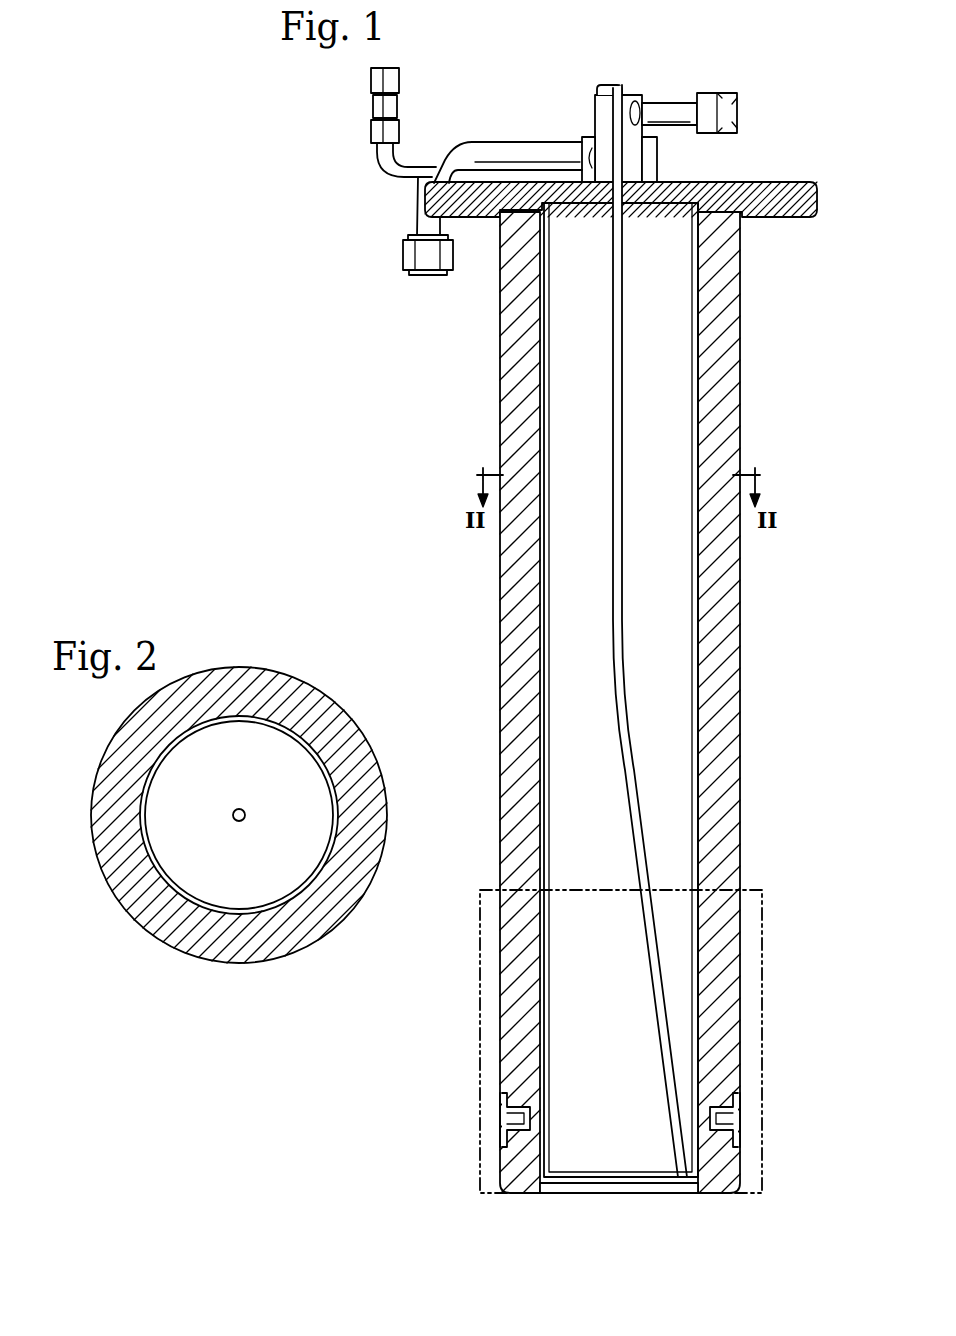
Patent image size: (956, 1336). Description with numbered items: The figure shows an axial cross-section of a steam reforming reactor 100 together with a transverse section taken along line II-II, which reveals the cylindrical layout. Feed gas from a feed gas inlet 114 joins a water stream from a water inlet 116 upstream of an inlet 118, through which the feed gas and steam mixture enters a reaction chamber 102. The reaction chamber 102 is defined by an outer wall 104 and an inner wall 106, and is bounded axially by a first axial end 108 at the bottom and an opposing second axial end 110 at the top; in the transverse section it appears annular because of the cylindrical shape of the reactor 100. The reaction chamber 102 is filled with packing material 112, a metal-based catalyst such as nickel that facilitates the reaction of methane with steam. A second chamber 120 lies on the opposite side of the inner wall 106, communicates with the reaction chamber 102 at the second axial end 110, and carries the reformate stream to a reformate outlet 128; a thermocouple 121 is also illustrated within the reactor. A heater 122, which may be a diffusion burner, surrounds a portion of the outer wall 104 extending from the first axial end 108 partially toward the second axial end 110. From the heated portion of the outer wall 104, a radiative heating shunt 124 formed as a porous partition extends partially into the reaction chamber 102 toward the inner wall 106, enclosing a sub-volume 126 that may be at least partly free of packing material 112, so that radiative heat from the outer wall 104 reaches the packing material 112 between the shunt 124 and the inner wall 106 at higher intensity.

In FIG. 1, the reactor 100 is at (735, 50).
In FIG. 2, the reactor 100 is at (246, 826).
In FIG. 1, the reaction chamber 102 is at (645, 725).
In FIG. 2, the reaction chamber 102 is at (246, 815).
In FIG. 1, the outer wall 104 is at (742, 312).
In FIG. 2, the outer wall 104 is at (121, 902).
In FIG. 1, the inner wall 106 is at (693, 587).
In FIG. 2, the inner wall 106 is at (147, 815).
In FIG. 1, the first axial end 108 is at (724, 1206).
In FIG. 1, the second axial end 110 is at (776, 166).
In FIG. 1, the packing material 112 is at (733, 427).
In FIG. 2, the packing material 112 is at (378, 817).
In FIG. 1, the feed gas inlet 114 is at (372, 88).
In FIG. 1, the water inlet 116 is at (403, 252).
In FIG. 1, the inlet 118 is at (513, 142).
In FIG. 1, the second chamber 120 is at (557, 412).
In FIG. 2, the second chamber 120 is at (288, 862).
In FIG. 1, the thermocouple 121 is at (622, 417).
In FIG. 2, the thermocouple 121 is at (245, 808).
In FIG. 1, the heater 122 is at (763, 900).
In FIG. 1, the radiative heating shunt 124 is at (503, 1142).
In FIG. 1, the sub-volume 126 is at (503, 1120).
In FIG. 1, the reformate outlet 128 is at (740, 110).